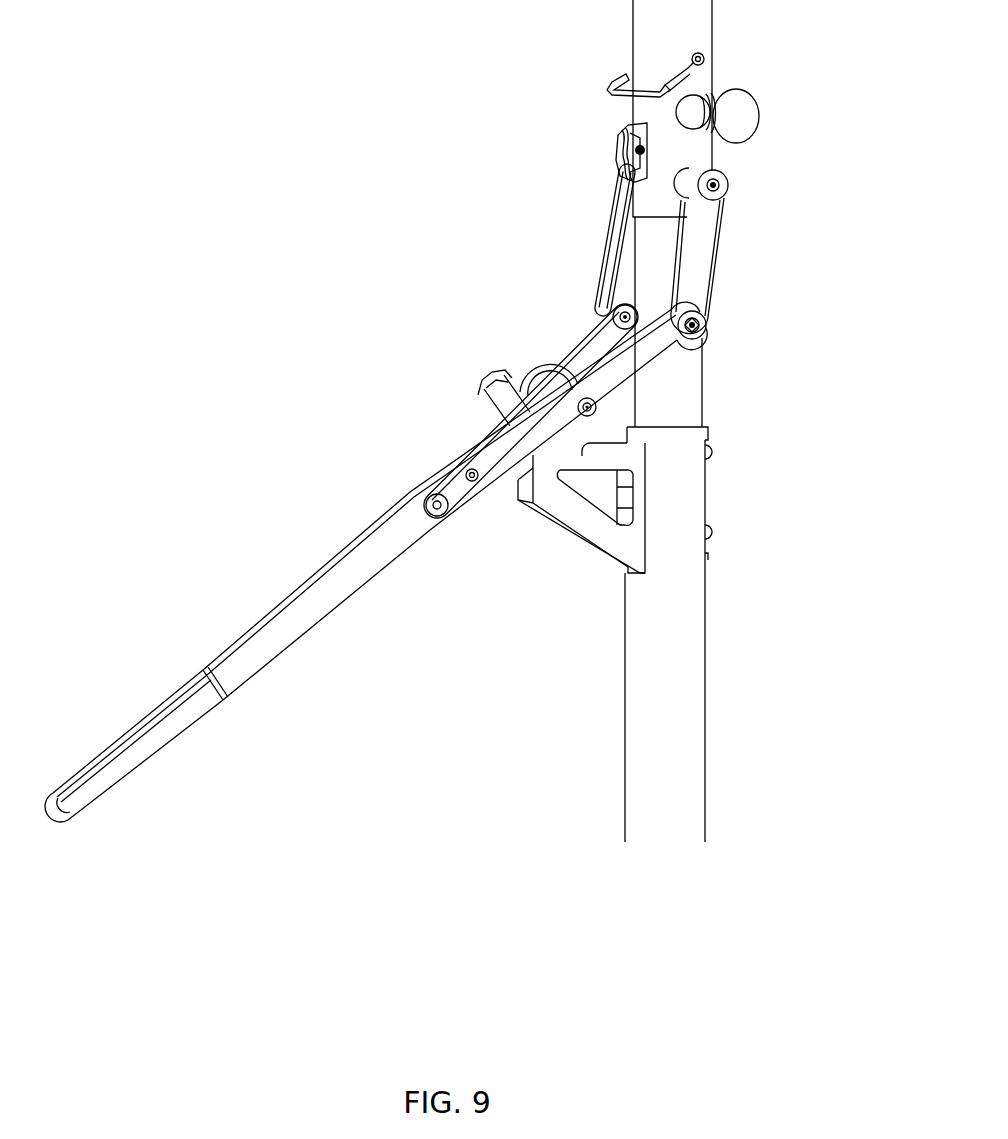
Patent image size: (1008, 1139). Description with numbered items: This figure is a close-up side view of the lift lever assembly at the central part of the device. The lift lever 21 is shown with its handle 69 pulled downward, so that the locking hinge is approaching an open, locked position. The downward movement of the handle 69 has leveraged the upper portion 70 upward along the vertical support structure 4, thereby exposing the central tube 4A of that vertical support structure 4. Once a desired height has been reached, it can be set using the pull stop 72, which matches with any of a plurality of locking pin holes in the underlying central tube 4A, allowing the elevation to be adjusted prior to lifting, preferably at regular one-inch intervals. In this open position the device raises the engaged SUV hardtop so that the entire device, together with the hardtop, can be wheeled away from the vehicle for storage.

The upper portion 70 is at (647, 25).
The pull stop 72 is at (740, 117).
The central tube 4A is at (682, 386).
The vertical support structure 4 is at (683, 663).
The lift lever 21 is at (318, 592).
The handle 69 is at (103, 760).